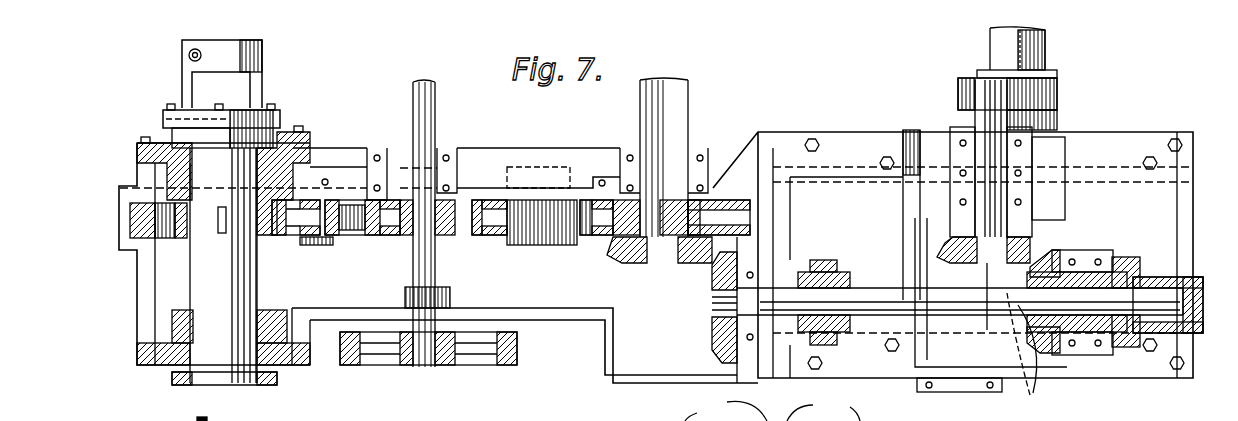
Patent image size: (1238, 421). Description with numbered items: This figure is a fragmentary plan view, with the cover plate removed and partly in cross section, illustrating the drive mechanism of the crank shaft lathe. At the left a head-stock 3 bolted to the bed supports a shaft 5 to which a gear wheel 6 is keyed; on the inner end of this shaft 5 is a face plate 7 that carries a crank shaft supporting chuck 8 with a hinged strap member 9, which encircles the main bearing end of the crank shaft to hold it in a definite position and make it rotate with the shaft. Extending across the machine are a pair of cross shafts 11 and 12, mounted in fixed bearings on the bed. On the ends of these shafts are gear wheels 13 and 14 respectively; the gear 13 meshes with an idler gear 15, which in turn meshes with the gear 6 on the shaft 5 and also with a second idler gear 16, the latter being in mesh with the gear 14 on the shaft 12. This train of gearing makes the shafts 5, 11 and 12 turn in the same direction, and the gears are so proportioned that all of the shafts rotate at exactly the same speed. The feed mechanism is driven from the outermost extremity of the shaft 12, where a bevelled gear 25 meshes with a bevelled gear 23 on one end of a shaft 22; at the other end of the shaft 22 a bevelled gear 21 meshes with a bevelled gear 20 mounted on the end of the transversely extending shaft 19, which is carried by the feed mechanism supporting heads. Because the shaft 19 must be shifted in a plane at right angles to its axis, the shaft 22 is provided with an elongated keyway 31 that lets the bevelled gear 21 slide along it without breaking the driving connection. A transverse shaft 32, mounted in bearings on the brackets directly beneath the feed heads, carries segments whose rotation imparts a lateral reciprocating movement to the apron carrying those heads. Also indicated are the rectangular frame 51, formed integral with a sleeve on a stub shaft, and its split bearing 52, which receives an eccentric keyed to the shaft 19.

The head-stock 3 is at (287, 132).
The shaft 5 is at (195, 290).
The gear wheel 6 is at (158, 227).
The face plate 7 is at (182, 137).
The crank shaft supporting chuck 8 is at (247, 112).
The hinged strap member 9 is at (222, 42).
The cross shaft 11 is at (420, 115).
The cross shaft 12 is at (673, 107).
The gear wheel 13 is at (363, 238).
The gear wheel 14 is at (607, 236).
The idler gear 15 is at (313, 238).
The idler gear 16 is at (537, 238).
The transversely extending shaft 19 is at (980, 117).
The bevelled gear 20 is at (947, 250).
The bevelled gear 21 is at (1047, 263).
The shaft 22 is at (890, 268).
The bevelled gear 23 is at (711, 323).
The bevelled gear 25 is at (623, 262).
The elongated keyway 31 is at (1031, 352).
The transverse shaft 32 is at (1030, 47).
The rectangular frame 51 is at (726, 407).
The split bearing 52 is at (823, 407).